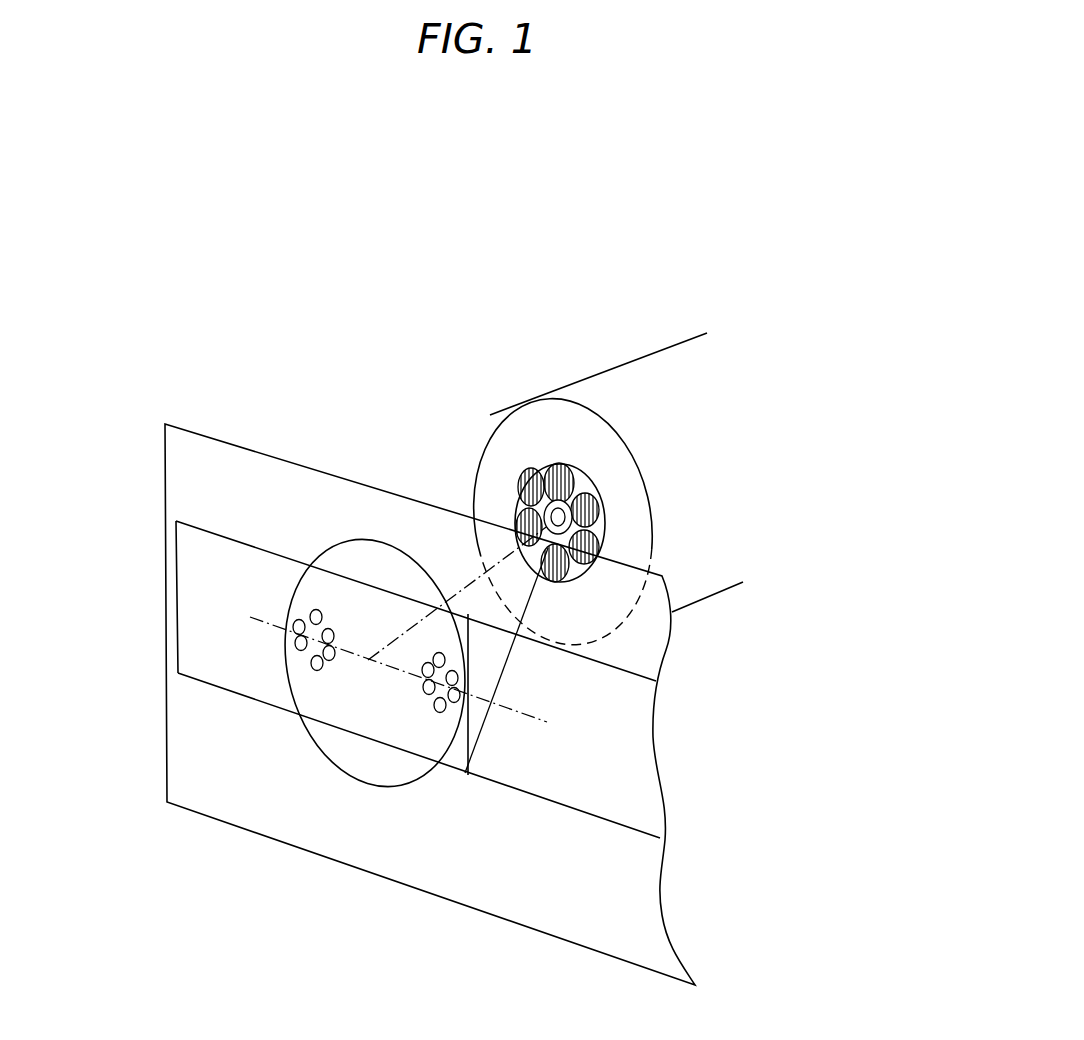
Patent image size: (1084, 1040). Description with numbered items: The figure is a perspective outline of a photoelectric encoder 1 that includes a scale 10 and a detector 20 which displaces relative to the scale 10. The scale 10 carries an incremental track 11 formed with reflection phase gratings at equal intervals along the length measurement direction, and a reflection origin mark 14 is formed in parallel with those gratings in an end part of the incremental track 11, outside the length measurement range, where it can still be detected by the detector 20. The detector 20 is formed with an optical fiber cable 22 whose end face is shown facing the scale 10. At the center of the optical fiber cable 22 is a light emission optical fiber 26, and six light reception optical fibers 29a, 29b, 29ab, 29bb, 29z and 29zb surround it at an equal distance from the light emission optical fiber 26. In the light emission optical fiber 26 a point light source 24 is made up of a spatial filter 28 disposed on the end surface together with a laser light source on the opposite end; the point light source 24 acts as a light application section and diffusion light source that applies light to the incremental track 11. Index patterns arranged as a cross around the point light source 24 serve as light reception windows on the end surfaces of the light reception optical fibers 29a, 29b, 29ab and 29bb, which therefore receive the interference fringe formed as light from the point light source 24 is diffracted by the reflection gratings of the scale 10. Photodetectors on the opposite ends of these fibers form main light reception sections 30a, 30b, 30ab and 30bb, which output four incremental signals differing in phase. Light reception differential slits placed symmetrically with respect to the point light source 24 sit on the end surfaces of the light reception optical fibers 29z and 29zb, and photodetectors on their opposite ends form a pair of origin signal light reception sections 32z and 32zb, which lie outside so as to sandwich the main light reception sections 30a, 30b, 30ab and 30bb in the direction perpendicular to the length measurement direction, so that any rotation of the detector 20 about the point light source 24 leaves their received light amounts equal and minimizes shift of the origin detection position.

The photoelectric encoder 1 is at (680, 312).
The scale 10 is at (165, 710).
The incremental track 11 is at (228, 560).
The origin mark 14 is at (466, 771).
The detector 20 is at (460, 386).
The optical fiber cable 22 is at (610, 367).
The point light source 24 is at (712, 500).
The light emission optical fiber 26 is at (600, 518).
The spatial filter 28 is at (600, 538).
The light reception optical fiber 29a is at (530, 463).
The light reception optical fiber 29z is at (550, 466).
The origin signal light reception section 32z is at (568, 470).
The light reception optical fiber 29b is at (590, 485).
The main light reception section 30b is at (595, 500).
The main light reception section 30a is at (518, 475).
The main light reception section 30ab is at (516, 492).
The light reception optical fiber 29ab is at (516, 512).
The main light reception section 30bb is at (605, 550).
The light reception optical fiber 29bb is at (600, 549).
The light reception optical fiber 29zb is at (588, 570).
The origin signal light reception section 32zb is at (580, 572).